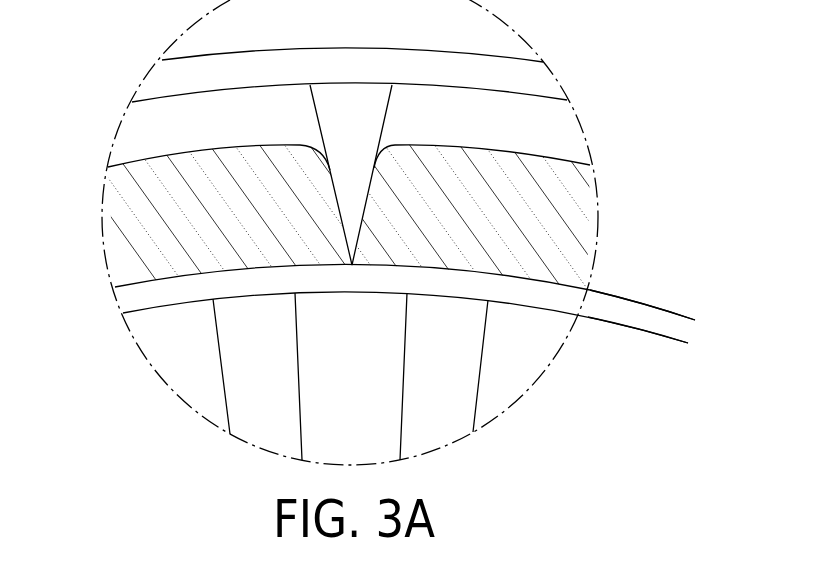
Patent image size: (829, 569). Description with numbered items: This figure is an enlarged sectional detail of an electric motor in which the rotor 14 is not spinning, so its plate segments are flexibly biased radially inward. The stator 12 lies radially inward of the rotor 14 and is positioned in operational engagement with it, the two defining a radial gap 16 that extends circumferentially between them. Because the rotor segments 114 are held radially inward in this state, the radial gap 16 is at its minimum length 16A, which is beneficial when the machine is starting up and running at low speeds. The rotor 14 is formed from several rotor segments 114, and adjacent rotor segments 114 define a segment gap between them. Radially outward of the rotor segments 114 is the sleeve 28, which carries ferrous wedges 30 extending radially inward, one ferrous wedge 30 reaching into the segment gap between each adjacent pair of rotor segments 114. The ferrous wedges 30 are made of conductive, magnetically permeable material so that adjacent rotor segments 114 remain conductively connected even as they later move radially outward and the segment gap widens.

The stator 12 is at (452, 383).
The rotor 14 is at (357, 181).
The rotor segments 114 is at (127, 233).
The radial gap 16 is at (133, 300).
The minimum length 16A is at (662, 378).
The sleeve 28 is at (532, 80).
The ferrous wedges 30 is at (353, 127).